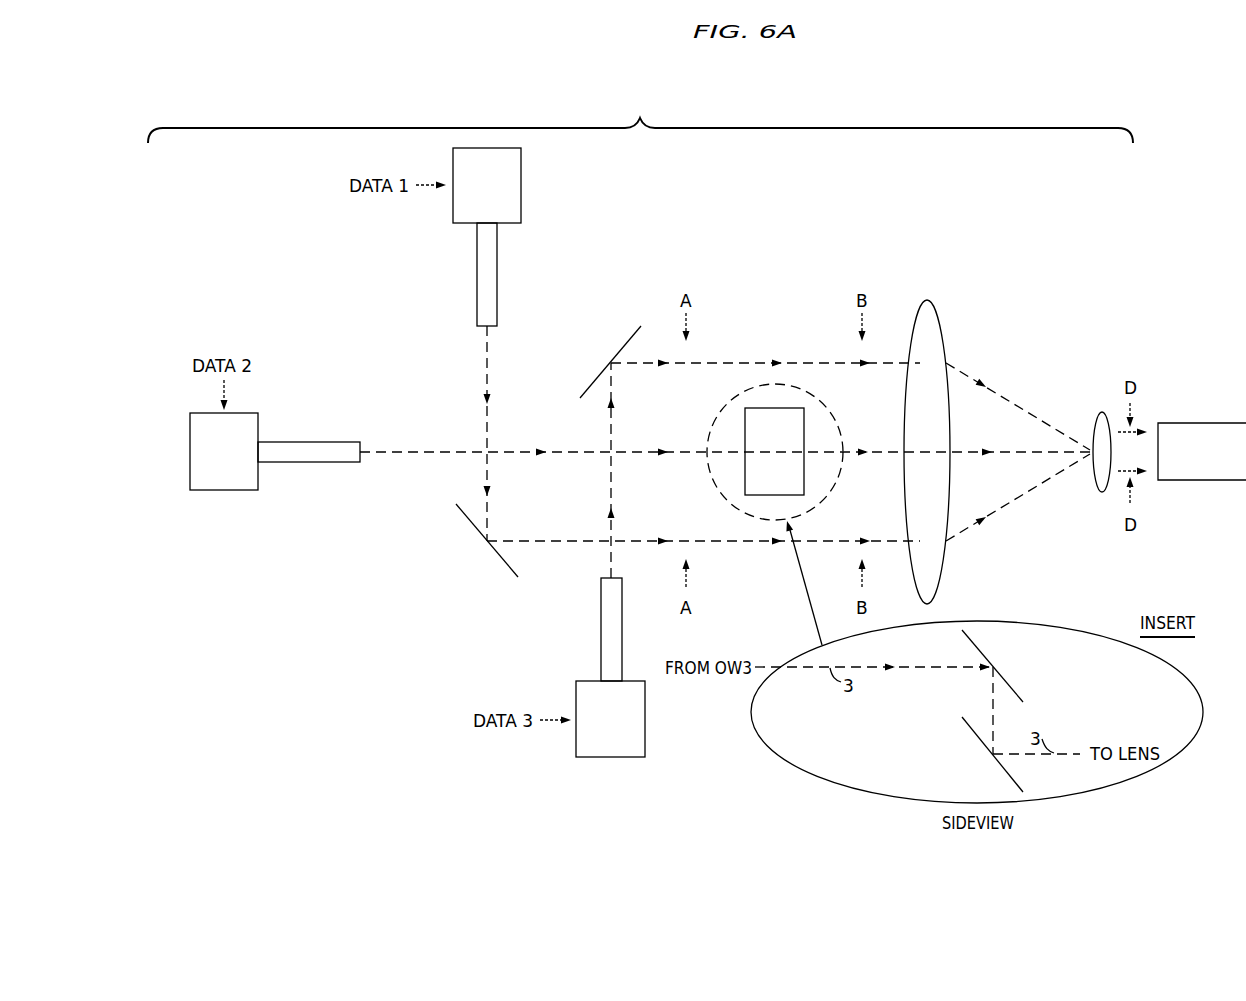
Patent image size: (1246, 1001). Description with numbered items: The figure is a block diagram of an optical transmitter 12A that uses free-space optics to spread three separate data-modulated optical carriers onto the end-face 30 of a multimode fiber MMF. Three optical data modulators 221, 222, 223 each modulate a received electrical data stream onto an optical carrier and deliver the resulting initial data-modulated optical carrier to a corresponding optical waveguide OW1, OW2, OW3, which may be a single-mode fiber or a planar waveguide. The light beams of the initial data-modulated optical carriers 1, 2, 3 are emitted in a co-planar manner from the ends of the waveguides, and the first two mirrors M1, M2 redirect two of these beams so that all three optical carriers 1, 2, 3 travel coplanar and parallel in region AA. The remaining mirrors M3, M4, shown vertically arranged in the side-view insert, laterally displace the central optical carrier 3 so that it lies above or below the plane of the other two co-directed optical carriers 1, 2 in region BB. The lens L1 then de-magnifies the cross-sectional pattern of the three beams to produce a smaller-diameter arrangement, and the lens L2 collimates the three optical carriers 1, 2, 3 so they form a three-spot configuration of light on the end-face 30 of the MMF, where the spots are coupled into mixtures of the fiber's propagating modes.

The optical transmitter 12A is at (640, 117).
The optical data modulator 221 is at (500, 198).
The optical data modulator 222 is at (625, 727).
The optical data modulator 223 is at (238, 465).
The end-face 30 is at (1157, 480).
The optical waveguide OW1 is at (497, 272).
The optical waveguide OW2 is at (600, 626).
The optical waveguide OW3 is at (297, 463).
The initial data-modulated optical carrier 1 is at (486, 371).
The initial data-modulated optical carrier 2 is at (611, 491).
The initial data-modulated optical carrier 3 is at (437, 451).
The mirror M1 is at (487, 540).
The mirror M2 is at (610, 362).
The mirror M3 is at (992, 666).
The mirror M4 is at (992, 754).
The lens L1 is at (927, 300).
The lens L2 is at (1102, 412).
The multimode fiber MMF is at (1197, 423).